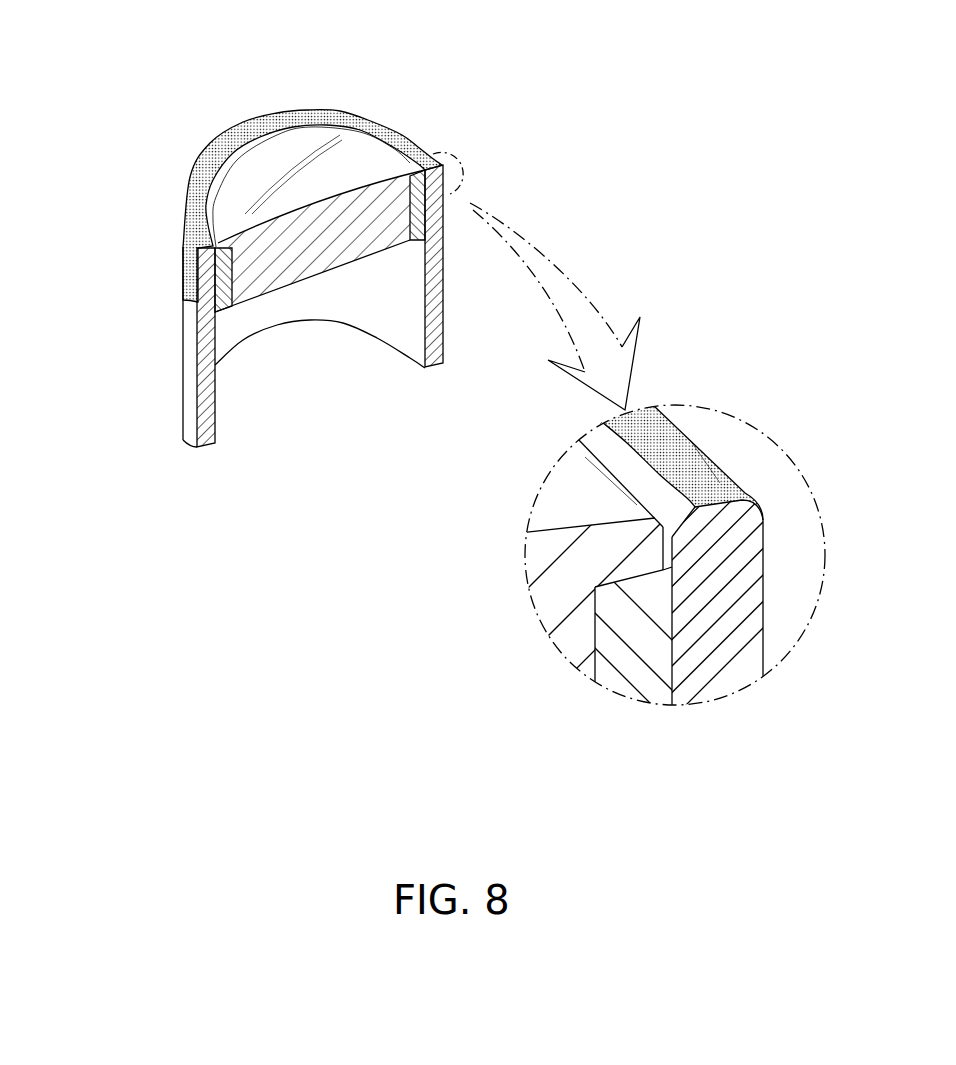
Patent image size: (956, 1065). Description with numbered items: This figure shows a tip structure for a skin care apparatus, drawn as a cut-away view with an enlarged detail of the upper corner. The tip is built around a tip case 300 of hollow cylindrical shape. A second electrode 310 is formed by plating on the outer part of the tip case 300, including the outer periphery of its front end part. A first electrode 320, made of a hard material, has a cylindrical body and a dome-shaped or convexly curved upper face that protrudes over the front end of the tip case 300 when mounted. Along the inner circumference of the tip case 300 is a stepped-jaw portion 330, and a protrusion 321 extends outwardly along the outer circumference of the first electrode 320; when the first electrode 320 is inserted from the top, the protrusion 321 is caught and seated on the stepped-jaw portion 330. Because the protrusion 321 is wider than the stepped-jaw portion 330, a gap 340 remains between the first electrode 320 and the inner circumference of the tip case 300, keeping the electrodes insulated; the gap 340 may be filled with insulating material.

The tip case 300 is at (188, 387).
The second electrode 310 is at (187, 252).
The first electrode 320 is at (247, 160).
The protrusion 321 is at (557, 577).
The stepped-jaw portion 330 is at (625, 670).
The gap 340 is at (652, 477).